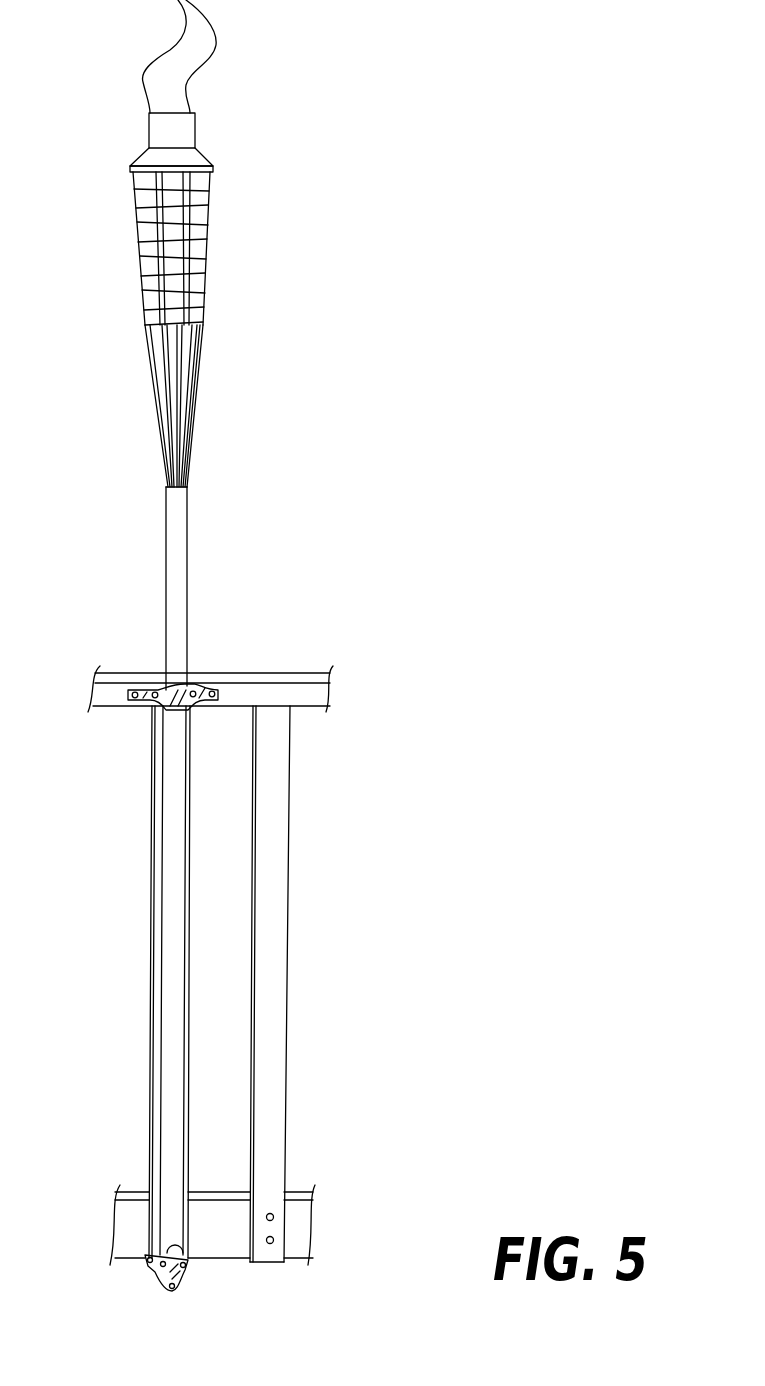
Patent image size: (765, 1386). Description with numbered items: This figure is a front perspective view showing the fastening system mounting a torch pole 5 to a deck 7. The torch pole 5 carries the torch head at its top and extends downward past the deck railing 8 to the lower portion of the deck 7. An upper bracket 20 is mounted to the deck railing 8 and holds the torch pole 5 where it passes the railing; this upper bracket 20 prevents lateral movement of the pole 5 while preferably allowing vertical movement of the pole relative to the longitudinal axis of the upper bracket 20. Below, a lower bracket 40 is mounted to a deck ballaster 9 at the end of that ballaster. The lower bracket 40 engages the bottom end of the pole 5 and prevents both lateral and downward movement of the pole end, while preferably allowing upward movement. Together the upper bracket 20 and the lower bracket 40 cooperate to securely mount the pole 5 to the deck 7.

The torch pole 5 is at (200, 527).
The deck 7 is at (292, 640).
The deck railing 8 is at (314, 697).
The deck ballaster 9 is at (275, 970).
The upper bracket 20 is at (138, 720).
The lower bracket 40 is at (207, 1286).